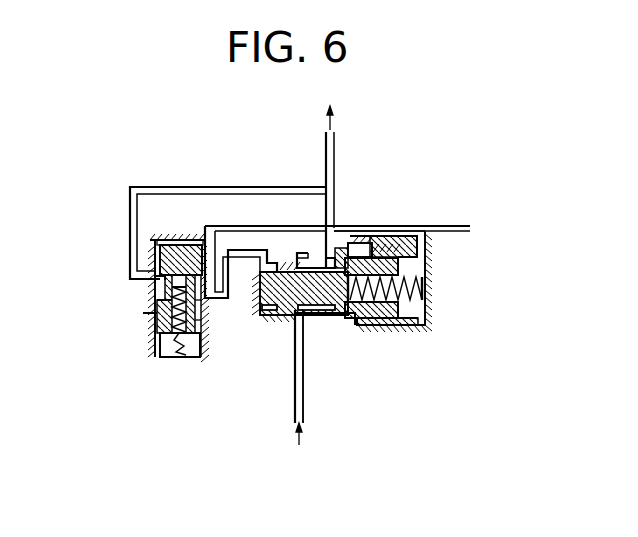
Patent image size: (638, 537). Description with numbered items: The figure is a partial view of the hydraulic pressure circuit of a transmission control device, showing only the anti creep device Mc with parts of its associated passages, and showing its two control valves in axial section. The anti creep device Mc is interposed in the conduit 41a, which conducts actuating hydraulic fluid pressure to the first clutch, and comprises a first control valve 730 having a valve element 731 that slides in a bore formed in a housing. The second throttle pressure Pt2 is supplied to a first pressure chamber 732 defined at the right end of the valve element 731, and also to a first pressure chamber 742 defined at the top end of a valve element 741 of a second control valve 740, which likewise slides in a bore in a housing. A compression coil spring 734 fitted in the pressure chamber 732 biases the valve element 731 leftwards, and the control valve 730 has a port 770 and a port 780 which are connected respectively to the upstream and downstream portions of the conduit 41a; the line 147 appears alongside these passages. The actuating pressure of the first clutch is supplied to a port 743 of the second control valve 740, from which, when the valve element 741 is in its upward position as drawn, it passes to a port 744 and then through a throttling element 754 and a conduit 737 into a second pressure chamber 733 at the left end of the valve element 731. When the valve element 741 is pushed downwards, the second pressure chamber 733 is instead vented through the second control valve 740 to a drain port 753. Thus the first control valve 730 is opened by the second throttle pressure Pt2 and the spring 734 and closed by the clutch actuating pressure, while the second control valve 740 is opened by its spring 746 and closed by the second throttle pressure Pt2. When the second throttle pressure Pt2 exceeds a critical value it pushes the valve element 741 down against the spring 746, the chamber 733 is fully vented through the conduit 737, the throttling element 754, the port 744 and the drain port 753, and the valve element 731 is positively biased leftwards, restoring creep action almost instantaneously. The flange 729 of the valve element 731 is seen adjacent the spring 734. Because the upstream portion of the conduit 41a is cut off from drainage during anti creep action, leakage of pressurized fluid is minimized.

The conduit 41a is at (334, 151).
The hydraulic line 147 is at (452, 228).
The piston flange 729 is at (358, 338).
The first control valve 730 is at (327, 328).
The valve element 731 is at (287, 307).
The first pressure chamber 732 is at (413, 327).
The second pressure chamber 733 is at (270, 310).
The compression coil spring 734 is at (417, 296).
The conduit 737 is at (245, 258).
The second control valve 740 is at (159, 299).
The valve element 741 is at (168, 242).
The first pressure chamber 742 is at (157, 243).
The port 743 is at (155, 276).
The port 744 is at (204, 300).
The spring 746 is at (177, 352).
The drain port 753 is at (157, 313).
The throttling element 754 is at (222, 303).
The port 770 is at (305, 317).
The port 780 is at (328, 268).
The anti creep device Mc is at (128, 212).
The second throttle pressure Pt2 is at (430, 224).